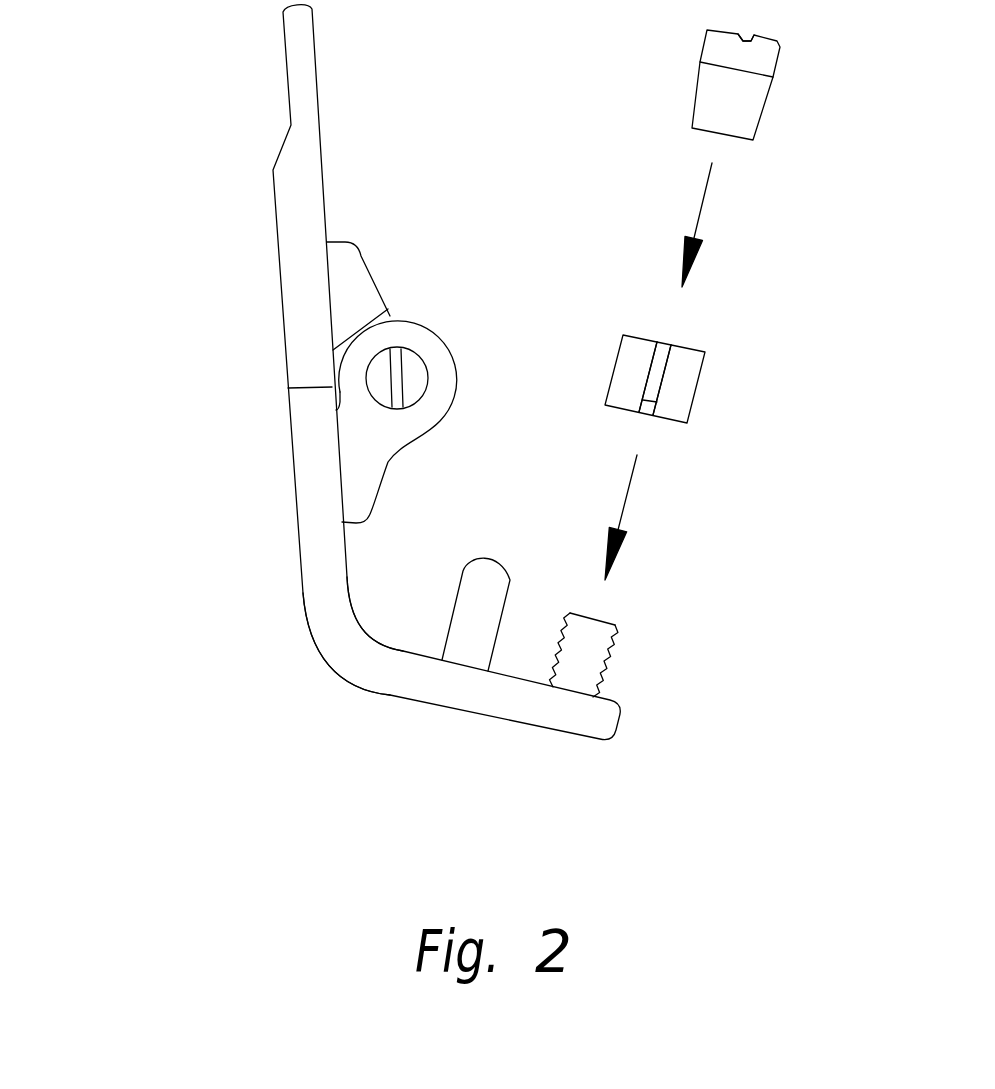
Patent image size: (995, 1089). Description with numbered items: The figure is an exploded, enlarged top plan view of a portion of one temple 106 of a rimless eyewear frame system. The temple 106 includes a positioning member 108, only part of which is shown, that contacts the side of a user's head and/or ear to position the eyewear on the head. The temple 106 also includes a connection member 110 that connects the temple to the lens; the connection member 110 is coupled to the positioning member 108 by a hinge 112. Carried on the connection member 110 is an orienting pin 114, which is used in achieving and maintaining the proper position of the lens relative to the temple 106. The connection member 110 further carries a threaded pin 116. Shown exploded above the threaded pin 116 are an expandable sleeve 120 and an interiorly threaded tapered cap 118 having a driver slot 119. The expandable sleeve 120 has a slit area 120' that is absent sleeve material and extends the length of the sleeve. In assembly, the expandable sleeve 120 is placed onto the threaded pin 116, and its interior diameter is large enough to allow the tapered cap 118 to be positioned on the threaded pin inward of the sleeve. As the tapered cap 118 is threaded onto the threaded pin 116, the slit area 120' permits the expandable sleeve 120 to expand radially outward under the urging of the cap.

The temple 106 is at (183, 105).
The positioning member 108 is at (318, 97).
The connection member 110 is at (367, 677).
The hinge 112 is at (388, 310).
The orienting pin 114 is at (482, 560).
The threaded pin 116 is at (615, 622).
The tapered cap 118 is at (760, 120).
The driver slot 119 is at (748, 36).
The expandable sleeve 120 is at (711, 379).
The slit area 120' is at (724, 360).